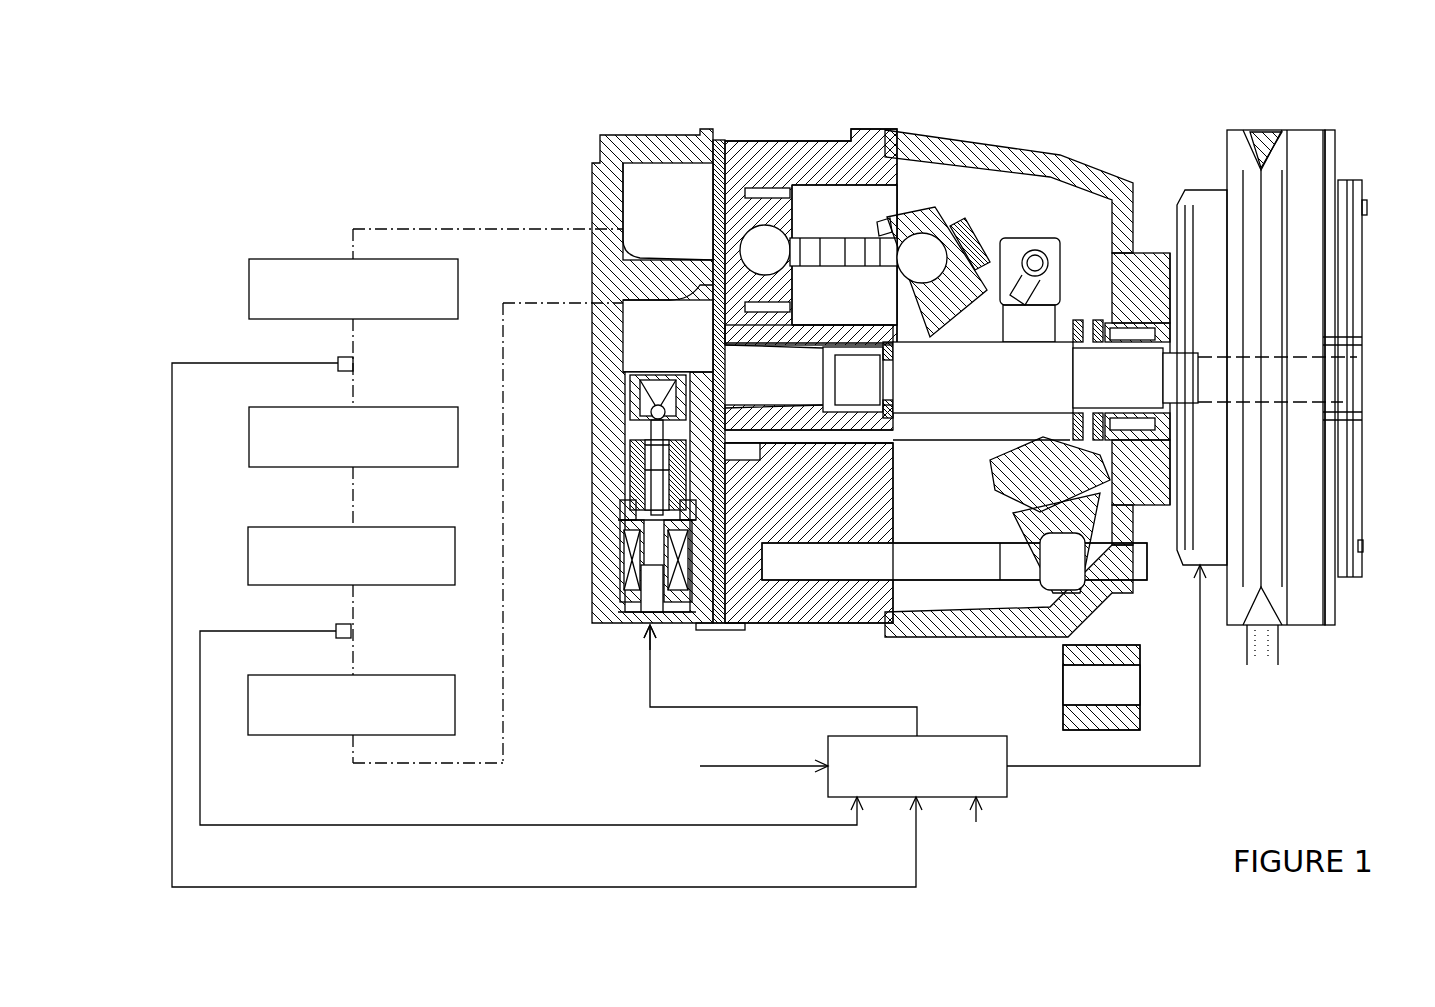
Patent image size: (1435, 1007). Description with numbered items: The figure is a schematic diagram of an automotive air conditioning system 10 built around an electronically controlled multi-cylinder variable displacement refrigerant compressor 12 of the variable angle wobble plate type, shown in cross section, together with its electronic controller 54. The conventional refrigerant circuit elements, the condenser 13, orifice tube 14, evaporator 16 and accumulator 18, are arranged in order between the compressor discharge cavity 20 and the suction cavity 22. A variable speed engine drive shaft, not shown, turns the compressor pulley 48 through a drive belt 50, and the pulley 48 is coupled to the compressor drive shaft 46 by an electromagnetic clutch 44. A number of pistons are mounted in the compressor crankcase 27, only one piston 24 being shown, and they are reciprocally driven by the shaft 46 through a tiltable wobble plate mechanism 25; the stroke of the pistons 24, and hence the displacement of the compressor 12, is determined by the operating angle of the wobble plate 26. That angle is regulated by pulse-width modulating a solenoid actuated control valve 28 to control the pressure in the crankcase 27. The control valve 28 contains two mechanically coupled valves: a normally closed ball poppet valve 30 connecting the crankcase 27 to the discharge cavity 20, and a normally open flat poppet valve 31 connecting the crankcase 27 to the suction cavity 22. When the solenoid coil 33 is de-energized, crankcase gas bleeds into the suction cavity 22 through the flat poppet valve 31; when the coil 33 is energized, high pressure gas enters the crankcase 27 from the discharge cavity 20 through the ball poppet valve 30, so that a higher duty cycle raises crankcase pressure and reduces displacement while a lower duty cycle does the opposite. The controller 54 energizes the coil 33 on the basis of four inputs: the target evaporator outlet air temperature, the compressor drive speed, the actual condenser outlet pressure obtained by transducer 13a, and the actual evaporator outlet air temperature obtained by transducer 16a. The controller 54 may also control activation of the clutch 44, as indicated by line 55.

The automotive air conditioning system 10 is at (537, 127).
The variable displacement refrigerant compressor 12 is at (943, 393).
The condenser 13 is at (278, 675).
The transducer 13a is at (351, 627).
The orifice tube 14 is at (278, 527).
The evaporator 16 is at (278, 407).
The transducer 16a is at (353, 360).
The accumulator 18 is at (278, 259).
The compressor discharge cavity 20 is at (637, 288).
The compressor suction cavity 22 is at (672, 207).
The piston 24 is at (757, 140).
The tiltable wobble plate mechanism 25 is at (1040, 200).
The wobble plate 26 is at (912, 205).
The compressor crankcase 27 is at (958, 185).
The solenoid actuated control valve 28 is at (613, 467).
The ball poppet valve 30 is at (635, 387).
The flat poppet valve 31 is at (622, 482).
The solenoid coil 33 is at (617, 558).
The electromagnetic clutch 44 is at (1299, 361).
The compressor drive shaft 46 is at (1135, 358).
The compressor pulley 48 is at (1300, 150).
The drive belt 50 is at (1262, 152).
The electronic controller 54 is at (958, 736).
The line 55 is at (1092, 766).